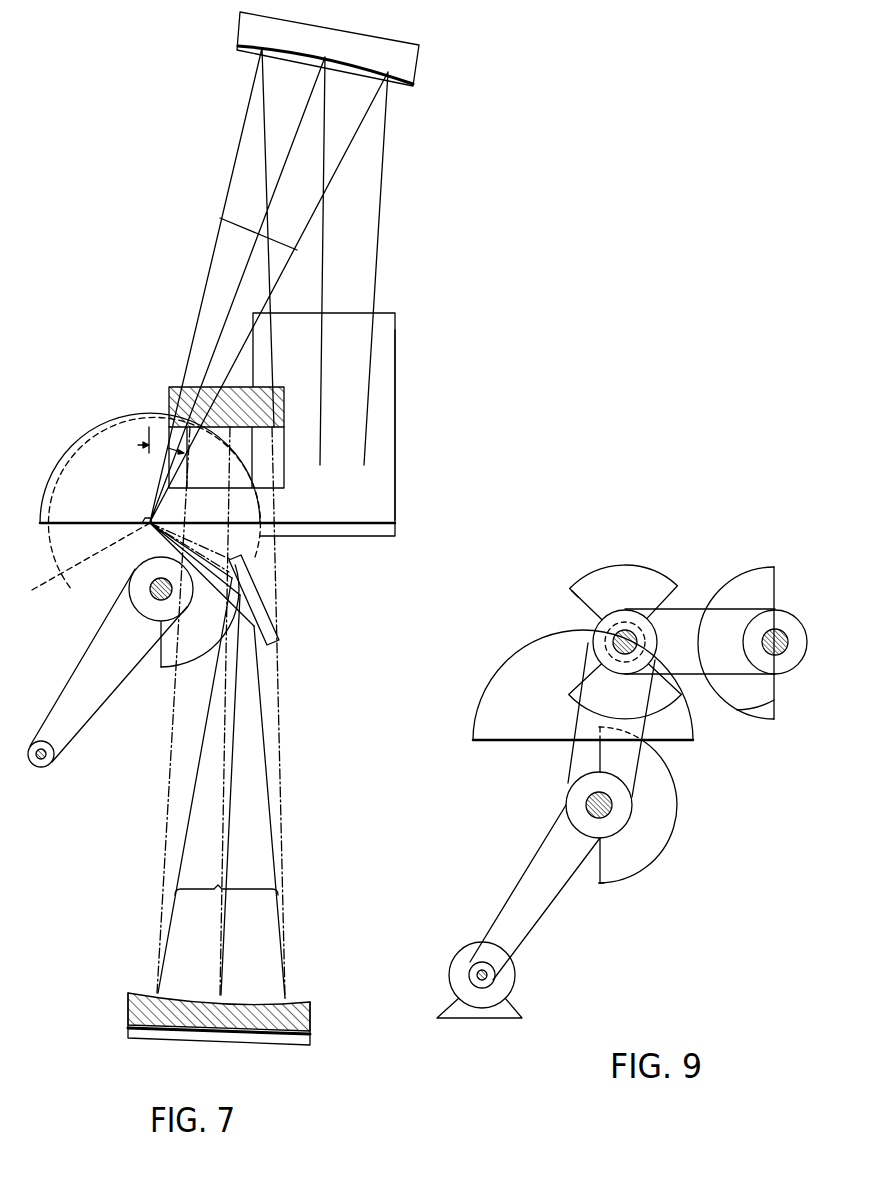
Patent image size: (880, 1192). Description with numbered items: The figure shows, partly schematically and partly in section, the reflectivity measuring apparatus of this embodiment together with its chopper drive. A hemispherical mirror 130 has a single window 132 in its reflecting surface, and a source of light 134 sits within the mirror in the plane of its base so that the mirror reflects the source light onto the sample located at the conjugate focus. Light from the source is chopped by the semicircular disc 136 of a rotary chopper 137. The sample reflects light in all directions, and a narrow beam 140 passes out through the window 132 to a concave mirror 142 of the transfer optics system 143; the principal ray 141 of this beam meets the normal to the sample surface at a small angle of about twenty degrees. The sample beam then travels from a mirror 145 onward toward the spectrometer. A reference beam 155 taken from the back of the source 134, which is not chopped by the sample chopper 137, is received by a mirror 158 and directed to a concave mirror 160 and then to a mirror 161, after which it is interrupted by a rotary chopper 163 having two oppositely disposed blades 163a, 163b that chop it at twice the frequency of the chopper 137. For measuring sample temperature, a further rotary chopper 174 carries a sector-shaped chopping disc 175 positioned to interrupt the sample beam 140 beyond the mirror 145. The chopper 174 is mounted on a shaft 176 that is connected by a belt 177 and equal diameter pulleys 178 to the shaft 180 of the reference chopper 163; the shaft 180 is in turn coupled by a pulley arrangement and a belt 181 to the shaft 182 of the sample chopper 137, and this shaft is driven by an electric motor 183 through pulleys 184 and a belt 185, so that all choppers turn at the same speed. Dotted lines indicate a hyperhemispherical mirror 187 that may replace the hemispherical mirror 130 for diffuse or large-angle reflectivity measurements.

In FIG. 7, the hemispherical mirror 130 is at (107, 418).
In FIG. 9, the hemispherical mirror 130 is at (493, 672).
In FIG. 7, the window 132 is at (190, 418).
In FIG. 7, the source of light 134 is at (143, 525).
In FIG. 7, the semicircular disc 136 is at (185, 655).
In FIG. 9, the semicircular disc 136 is at (667, 803).
In FIG. 7, the rotary chopper 137 is at (162, 657).
In FIG. 9, the rotary chopper 137 is at (663, 847).
In FIG. 7, the beam 140 is at (257, 230).
In FIG. 7, the principal ray 141 is at (290, 143).
In FIG. 7, the concave mirror 142 is at (417, 76).
In FIG. 7, the transfer optics system 143 is at (412, 347).
In FIG. 7, the mirror 145 is at (398, 450).
In FIG. 7, the reference beam 155 is at (218, 880).
In FIG. 7, the mirror 158 is at (257, 588).
In FIG. 7, the concave mirror 160 is at (310, 1015).
In FIG. 7, the mirror 161 is at (284, 473).
In FIG. 9, the rotary chopper 163 is at (627, 563).
In FIG. 9, the blade 163a is at (572, 591).
In FIG. 9, the blade 163b is at (668, 742).
In FIG. 9, the rotary chopper 174 is at (760, 565).
In FIG. 9, the chopping disc 175 is at (737, 710).
In FIG. 9, the shaft 176 is at (785, 632).
In FIG. 9, the belt 177 is at (682, 608).
In FIG. 9, the pulleys 178 is at (602, 620).
In FIG. 9, the shaft 180 is at (623, 630).
In FIG. 9, the belt 181 is at (572, 760).
In FIG. 7, the shaft 182 is at (157, 600).
In FIG. 9, the shaft 182 is at (588, 815).
In FIG. 9, the electric motor 183 is at (448, 970).
In FIG. 9, the pulleys 184 is at (567, 807).
In FIG. 7, the belt 185 is at (60, 693).
In FIG. 9, the belt 185 is at (522, 877).
In FIG. 7, the hyperhemispherical mirror 187 is at (89, 571).